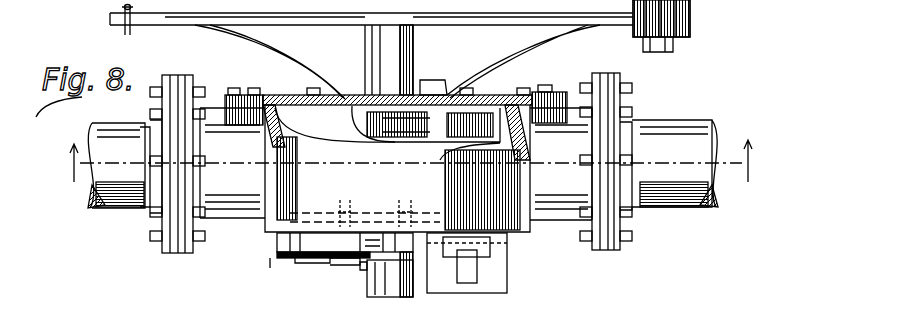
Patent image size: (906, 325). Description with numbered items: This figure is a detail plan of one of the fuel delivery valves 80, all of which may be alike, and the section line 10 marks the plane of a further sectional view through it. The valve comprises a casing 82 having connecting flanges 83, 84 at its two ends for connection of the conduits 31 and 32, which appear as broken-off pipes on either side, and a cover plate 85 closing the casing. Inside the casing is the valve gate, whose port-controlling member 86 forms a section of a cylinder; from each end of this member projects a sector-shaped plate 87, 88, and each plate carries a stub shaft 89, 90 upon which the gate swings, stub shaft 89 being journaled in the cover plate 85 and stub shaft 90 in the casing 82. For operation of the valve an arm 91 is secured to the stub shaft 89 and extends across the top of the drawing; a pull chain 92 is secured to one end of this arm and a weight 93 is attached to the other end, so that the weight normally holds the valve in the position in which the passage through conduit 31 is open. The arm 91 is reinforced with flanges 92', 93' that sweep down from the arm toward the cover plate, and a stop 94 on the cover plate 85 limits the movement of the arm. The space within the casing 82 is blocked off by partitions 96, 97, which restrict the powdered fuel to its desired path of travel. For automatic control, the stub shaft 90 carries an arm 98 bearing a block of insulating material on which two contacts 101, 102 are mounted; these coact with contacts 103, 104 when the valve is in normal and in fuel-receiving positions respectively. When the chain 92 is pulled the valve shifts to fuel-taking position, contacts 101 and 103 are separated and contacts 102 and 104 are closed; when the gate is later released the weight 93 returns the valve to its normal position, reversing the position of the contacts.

The section line 10 is at (409, 161).
The conduit 31 is at (113, 207).
The conduit 32 is at (483, 130).
The fuel delivery valve 80 is at (250, 258).
The casing 82 is at (268, 150).
The connecting flange 83 is at (180, 252).
The connecting flange 84 is at (620, 248).
The cover plate 85 is at (265, 95).
The port-controlling member 86 is at (523, 140).
The sector-shaped plate 87 is at (423, 133).
The sector-shaped plate 88 is at (428, 210).
The stub shaft 89 is at (322, 74).
The stub shaft 90 is at (361, 283).
The arm 91 is at (175, 25).
The pull chain 92 is at (127, 34).
The flange 92' is at (270, 62).
The weight 93 is at (682, 26).
The flange 93' is at (510, 61).
The stop 94 is at (447, 88).
The partition 96 is at (372, 146).
The partition 97 is at (380, 128).
The arm 98 is at (360, 260).
The contact 101 is at (373, 242).
The contact 102 is at (297, 259).
The contact 103 is at (395, 262).
The contact 104 is at (270, 270).